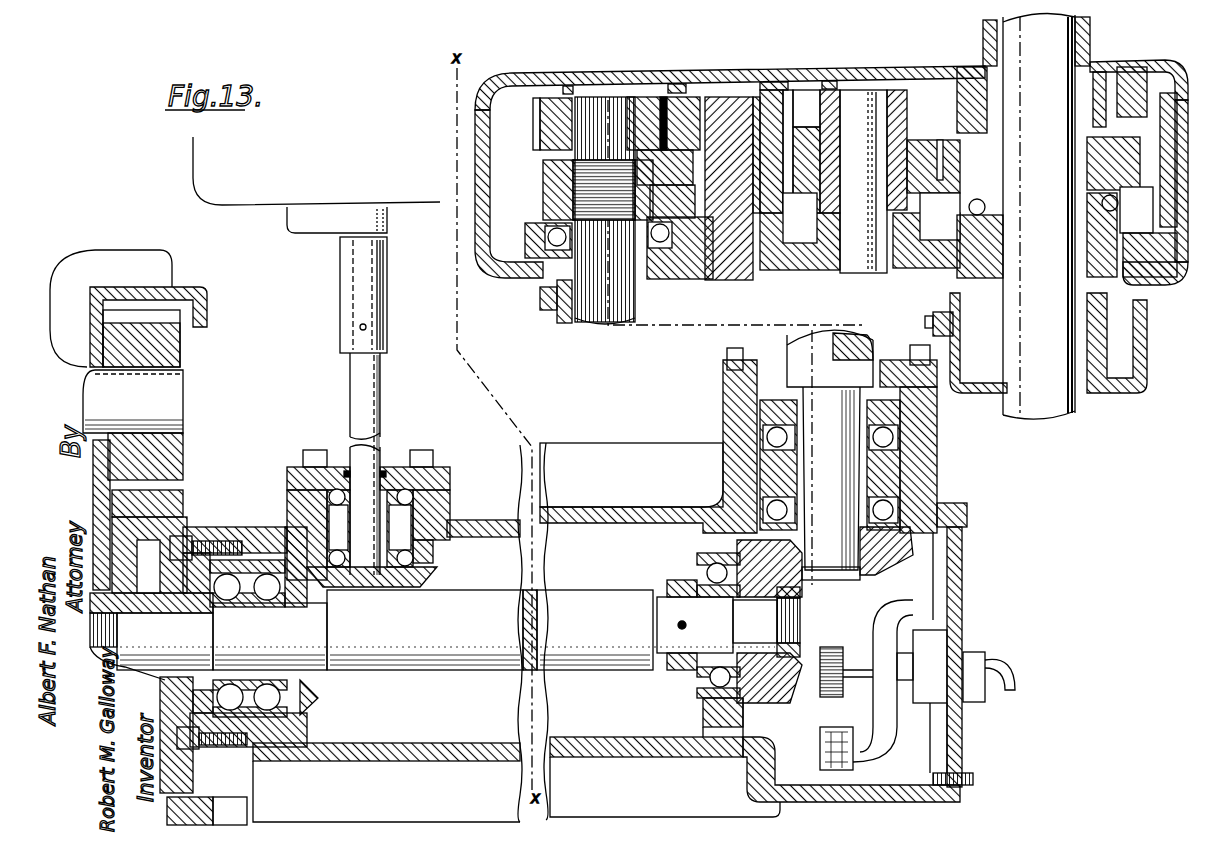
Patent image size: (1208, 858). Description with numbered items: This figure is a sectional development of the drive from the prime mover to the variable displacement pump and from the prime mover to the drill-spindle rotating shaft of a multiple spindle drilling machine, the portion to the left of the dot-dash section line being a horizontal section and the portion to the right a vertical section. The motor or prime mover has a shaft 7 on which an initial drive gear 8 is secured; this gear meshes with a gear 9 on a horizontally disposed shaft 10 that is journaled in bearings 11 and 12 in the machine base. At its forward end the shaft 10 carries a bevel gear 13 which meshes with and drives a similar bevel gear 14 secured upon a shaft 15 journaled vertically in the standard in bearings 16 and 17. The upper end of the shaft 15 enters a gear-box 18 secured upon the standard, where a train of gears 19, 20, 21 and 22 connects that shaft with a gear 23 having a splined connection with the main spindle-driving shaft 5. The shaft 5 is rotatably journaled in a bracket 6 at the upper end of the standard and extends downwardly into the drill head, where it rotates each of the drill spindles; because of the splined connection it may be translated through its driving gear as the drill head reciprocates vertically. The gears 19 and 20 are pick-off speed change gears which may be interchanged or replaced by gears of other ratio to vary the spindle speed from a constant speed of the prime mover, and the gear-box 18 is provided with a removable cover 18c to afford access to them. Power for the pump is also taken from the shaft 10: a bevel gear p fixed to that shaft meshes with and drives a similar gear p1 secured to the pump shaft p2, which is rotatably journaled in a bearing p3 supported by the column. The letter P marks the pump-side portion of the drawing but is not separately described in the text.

The main spindle-driving shaft 5 is at (1045, 405).
The bracket 6 is at (1133, 281).
The shaft 7 is at (185, 402).
The initial drive gear 8 is at (185, 457).
The gear 9 is at (185, 512).
The horizontally disposed shaft 10 is at (447, 630).
The bearing 11 is at (245, 568).
The bearing 12 is at (700, 573).
The bevel gear 13 is at (792, 588).
The bevel gear 14 is at (882, 570).
The shaft 15 is at (598, 320).
The bearing 16 is at (765, 462).
The bearing 17 is at (528, 278).
The gear-box 18 is at (803, 270).
The removable cover 18c is at (735, 60).
The pick-off speed change gear 19 is at (545, 150).
The pick-off speed change gear 20 is at (797, 90).
The gear 21 is at (672, 185).
The gear 22 is at (937, 190).
The gear 23 is at (1143, 185).
The pedestal P is at (345, 185).
The bevel gear p is at (318, 698).
The bevel gear p1 is at (432, 580).
The pump shaft p2 is at (382, 402).
The bearing p3 is at (448, 478).